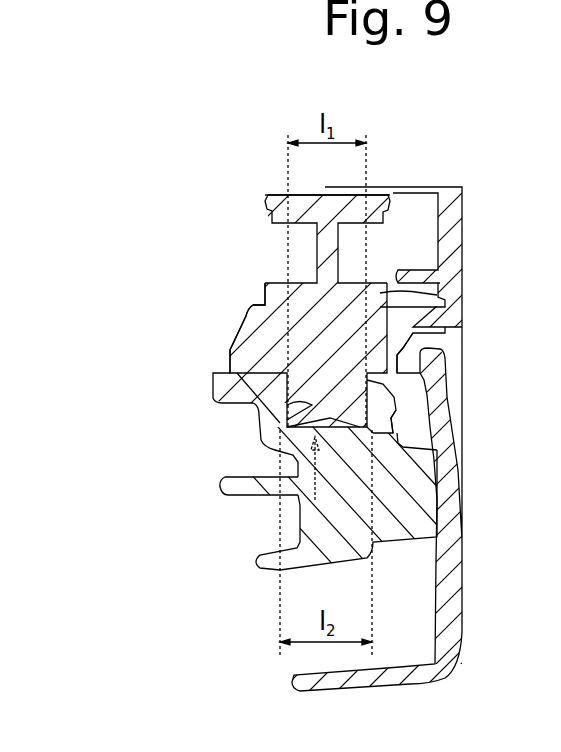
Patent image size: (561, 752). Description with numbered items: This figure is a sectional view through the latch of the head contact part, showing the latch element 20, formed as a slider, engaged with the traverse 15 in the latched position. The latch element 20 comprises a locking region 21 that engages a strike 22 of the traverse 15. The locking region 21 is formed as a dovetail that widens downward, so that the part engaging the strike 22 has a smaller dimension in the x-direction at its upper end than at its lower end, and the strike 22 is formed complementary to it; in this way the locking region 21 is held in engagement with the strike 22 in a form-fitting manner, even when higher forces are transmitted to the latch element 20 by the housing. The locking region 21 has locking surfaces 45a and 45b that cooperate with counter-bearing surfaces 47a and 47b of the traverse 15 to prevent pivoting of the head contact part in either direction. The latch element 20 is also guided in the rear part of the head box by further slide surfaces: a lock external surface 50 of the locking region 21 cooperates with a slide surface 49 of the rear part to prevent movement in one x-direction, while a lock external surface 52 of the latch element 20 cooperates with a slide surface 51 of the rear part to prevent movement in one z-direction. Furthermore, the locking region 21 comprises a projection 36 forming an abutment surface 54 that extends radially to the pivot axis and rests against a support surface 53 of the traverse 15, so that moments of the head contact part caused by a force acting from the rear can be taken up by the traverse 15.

The traverse 15 is at (347, 540).
The latch element 20 is at (263, 208).
The locking region 21 is at (243, 313).
The strike 22 is at (286, 520).
The projection 36 is at (227, 333).
The locking surface 45a is at (255, 401).
The locking surface 45b is at (380, 395).
The counter-bearing surface 47a is at (282, 426).
The counter-bearing surface 47b is at (392, 422).
The slide surface 49 is at (413, 338).
The lock external surface 50 is at (365, 328).
The slide surface 51 is at (415, 226).
The lock external surface 52 is at (283, 193).
The support surface 53 is at (223, 372).
The abutment surface 54 is at (212, 398).